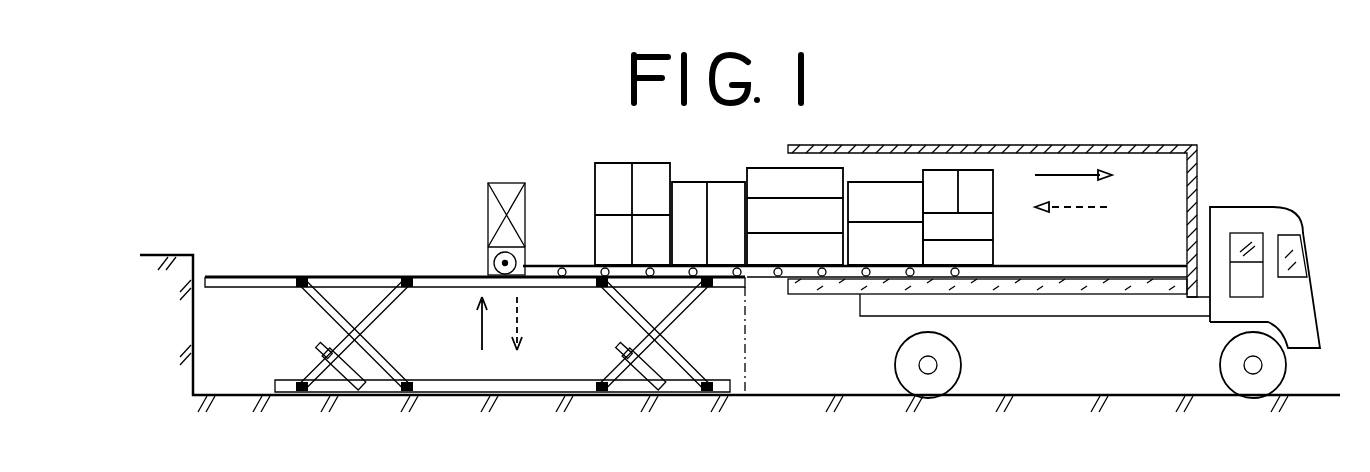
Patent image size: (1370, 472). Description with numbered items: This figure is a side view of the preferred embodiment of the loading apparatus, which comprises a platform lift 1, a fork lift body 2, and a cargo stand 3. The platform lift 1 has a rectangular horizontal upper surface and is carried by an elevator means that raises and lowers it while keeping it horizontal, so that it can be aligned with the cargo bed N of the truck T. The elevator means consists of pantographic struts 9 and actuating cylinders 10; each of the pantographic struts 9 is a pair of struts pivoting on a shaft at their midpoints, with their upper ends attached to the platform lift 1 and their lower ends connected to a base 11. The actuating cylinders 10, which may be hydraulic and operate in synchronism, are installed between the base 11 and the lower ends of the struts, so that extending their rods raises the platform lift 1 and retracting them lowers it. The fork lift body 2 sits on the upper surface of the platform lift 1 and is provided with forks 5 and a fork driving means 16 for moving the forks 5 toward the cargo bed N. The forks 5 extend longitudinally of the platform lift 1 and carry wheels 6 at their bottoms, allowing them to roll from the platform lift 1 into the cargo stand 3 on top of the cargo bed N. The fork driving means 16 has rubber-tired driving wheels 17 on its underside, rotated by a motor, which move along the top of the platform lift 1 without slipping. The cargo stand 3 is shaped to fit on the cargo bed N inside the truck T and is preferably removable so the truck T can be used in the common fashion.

The platform lift 1 is at (336, 272).
The fork lift body 2 is at (531, 257).
The cargo stand 3 is at (1133, 266).
The forks 5 is at (762, 277).
The wheels 6 is at (868, 277).
The pantographic struts 9 is at (320, 312).
The actuating cylinders 10 is at (357, 393).
The base 11 is at (533, 389).
The fork driving means 16 is at (502, 182).
The driving wheels 17 is at (493, 263).
The cargo bed N is at (1100, 296).
The truck T is at (1250, 188).